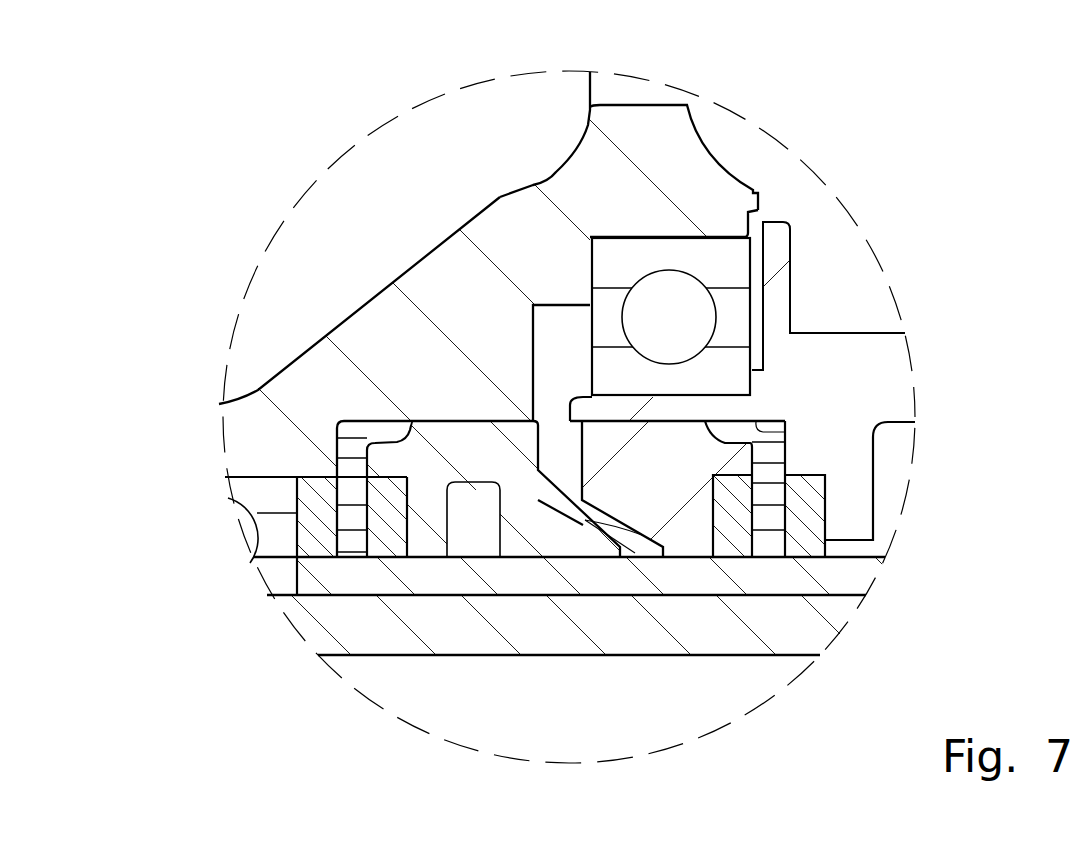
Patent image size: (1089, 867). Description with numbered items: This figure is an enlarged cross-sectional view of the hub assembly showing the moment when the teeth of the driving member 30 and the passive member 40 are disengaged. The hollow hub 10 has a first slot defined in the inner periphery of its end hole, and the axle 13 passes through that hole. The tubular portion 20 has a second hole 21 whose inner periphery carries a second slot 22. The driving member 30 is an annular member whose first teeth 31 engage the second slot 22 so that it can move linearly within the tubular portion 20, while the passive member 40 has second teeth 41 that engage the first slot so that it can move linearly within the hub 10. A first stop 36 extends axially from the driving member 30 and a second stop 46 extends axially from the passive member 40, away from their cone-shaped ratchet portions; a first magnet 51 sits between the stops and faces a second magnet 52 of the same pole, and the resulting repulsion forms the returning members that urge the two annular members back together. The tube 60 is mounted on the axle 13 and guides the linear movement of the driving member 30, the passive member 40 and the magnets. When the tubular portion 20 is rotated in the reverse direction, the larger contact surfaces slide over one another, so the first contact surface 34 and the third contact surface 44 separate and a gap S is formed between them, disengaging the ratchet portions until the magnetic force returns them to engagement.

The hub 10 is at (258, 385).
The axle 13 is at (343, 620).
The tubular portion 20 is at (817, 327).
The second hole 21 is at (757, 430).
The second slot 22 is at (674, 223).
The driving member 30 is at (727, 425).
The first teeth 31 is at (618, 420).
The first contact surface 34 is at (605, 520).
The first stop 36 is at (743, 454).
The passive member 40 is at (397, 425).
The second teeth 41 is at (433, 420).
The third contact surface 44 is at (555, 500).
The second stop 46 is at (377, 453).
The first magnet 51 is at (388, 540).
The second magnet 52 is at (312, 535).
The tube 60 is at (522, 582).
The gap S is at (633, 551).